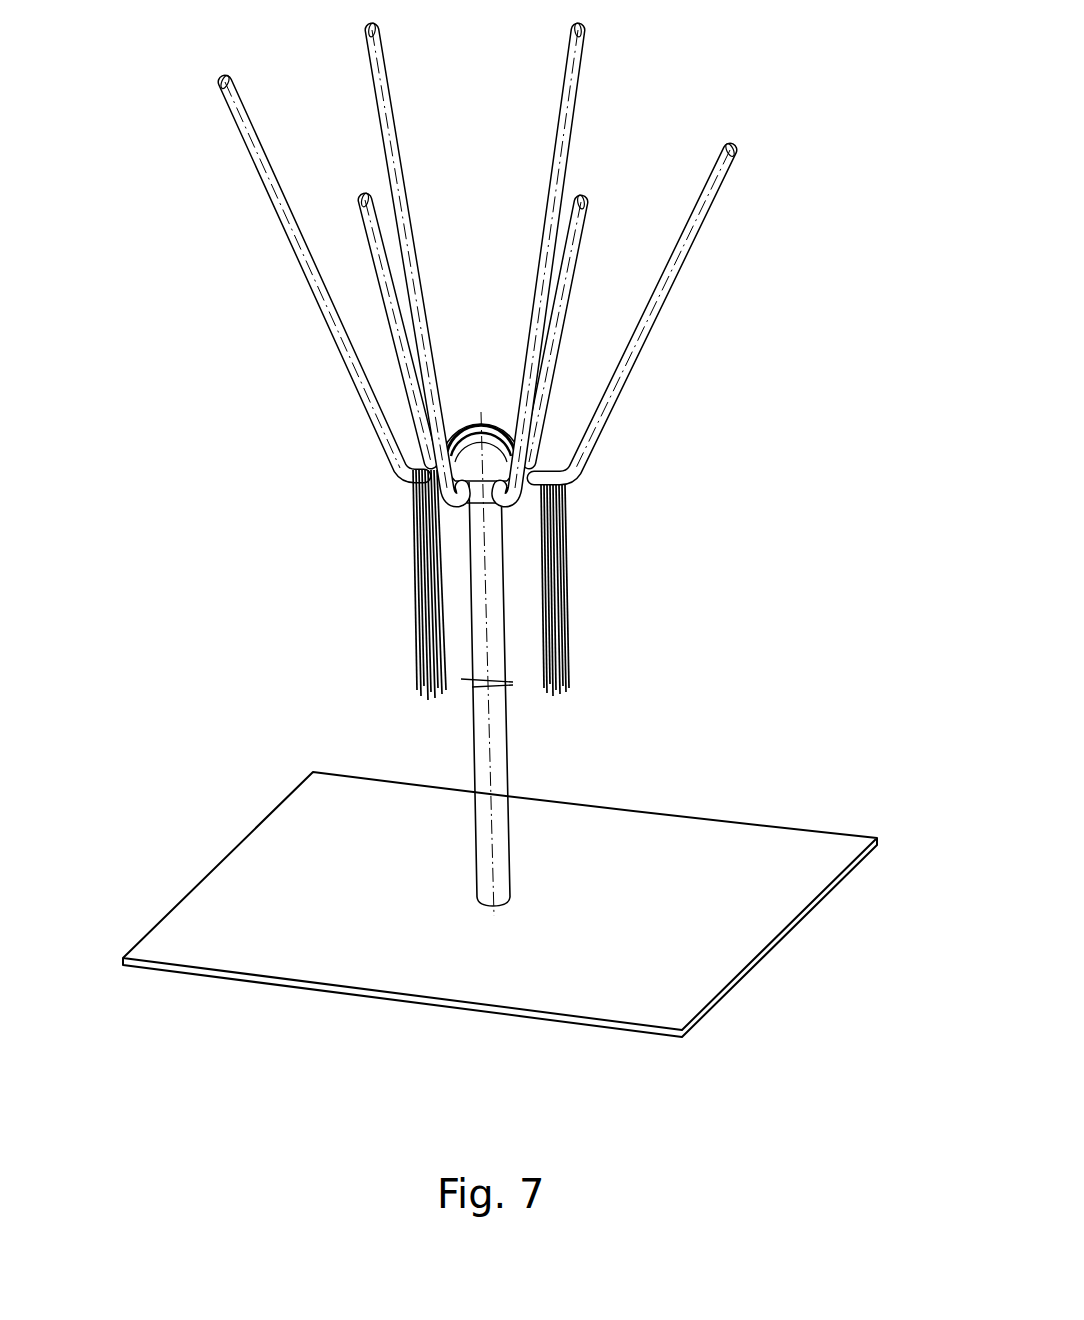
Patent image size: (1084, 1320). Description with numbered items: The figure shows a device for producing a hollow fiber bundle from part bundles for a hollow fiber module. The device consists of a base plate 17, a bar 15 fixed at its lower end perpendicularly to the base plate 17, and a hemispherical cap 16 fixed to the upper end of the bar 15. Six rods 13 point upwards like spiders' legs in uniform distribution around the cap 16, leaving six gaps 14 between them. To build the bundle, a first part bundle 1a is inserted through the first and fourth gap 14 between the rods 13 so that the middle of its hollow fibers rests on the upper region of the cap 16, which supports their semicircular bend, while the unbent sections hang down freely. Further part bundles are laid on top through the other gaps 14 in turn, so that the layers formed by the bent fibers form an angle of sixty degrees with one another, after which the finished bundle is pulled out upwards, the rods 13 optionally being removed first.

The rods 13 is at (477, 276).
The gap 14 is at (478, 361).
The bar 15 is at (498, 733).
The hemispherical cap 16 is at (492, 462).
The base plate 17 is at (678, 907).
The first part bundle 1a is at (563, 577).